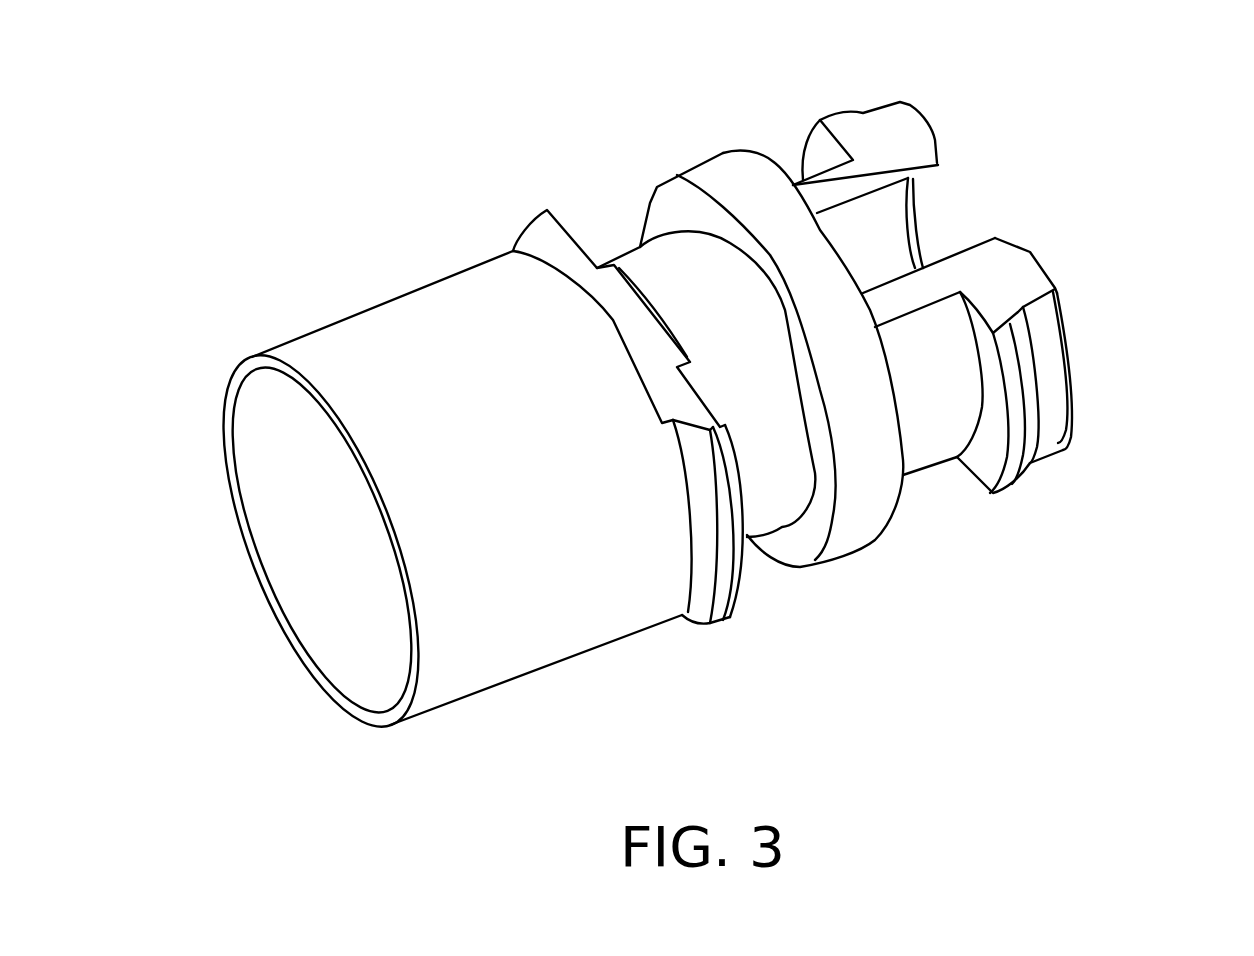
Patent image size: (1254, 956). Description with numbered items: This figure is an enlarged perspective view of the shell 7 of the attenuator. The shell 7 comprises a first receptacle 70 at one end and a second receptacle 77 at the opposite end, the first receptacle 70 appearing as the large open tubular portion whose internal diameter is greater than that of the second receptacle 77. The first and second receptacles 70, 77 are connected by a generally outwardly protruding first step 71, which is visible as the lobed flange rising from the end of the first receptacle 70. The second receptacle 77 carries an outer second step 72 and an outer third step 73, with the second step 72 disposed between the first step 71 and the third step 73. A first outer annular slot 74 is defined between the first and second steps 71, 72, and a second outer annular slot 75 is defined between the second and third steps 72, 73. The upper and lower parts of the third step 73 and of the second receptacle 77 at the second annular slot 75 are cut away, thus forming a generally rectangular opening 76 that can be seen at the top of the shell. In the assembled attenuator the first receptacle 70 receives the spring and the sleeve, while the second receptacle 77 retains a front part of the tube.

The shell 7 is at (317, 119).
The first receptacle 70 is at (518, 560).
The first step 71 is at (711, 551).
The second step 72 is at (740, 173).
The third step 73 is at (1047, 390).
The first outer annular slot 74 is at (760, 505).
The second outer annular slot 75 is at (932, 448).
The rectangular opening 76 is at (868, 240).
The second receptacle 77 is at (1213, 506).